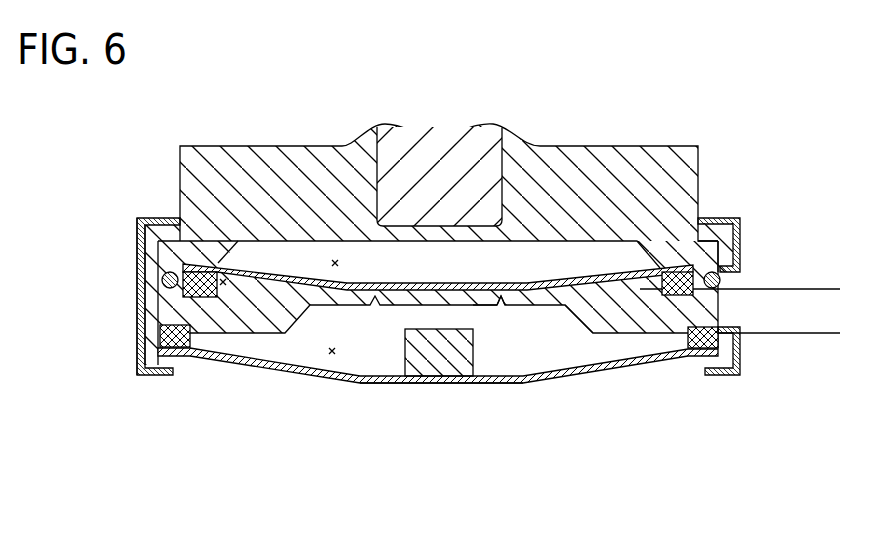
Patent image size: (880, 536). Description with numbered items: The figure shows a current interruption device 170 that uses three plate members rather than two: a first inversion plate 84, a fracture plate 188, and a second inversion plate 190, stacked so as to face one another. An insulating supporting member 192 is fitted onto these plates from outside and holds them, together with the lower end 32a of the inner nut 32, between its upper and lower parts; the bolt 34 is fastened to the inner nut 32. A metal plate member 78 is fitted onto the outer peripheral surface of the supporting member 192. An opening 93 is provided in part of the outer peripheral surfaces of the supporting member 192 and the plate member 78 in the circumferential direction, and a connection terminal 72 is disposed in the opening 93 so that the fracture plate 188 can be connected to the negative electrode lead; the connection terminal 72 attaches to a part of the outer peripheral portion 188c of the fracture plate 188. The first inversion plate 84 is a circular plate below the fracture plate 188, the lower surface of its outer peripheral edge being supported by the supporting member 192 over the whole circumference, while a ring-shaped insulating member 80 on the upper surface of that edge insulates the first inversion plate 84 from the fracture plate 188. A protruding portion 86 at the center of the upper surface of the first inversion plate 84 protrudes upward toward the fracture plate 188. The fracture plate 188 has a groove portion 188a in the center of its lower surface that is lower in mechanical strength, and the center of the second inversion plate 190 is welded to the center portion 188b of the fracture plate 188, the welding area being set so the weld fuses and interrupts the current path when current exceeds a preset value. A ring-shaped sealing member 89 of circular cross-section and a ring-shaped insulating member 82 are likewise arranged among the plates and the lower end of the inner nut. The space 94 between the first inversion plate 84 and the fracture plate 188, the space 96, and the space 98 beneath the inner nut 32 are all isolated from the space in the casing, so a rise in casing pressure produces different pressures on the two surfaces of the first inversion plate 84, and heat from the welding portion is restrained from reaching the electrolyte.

The inner nut 32 is at (178, 199).
The bolt 34 is at (465, 190).
The second inversion plate 190 is at (384, 344).
The lower end of the inner nut 32a is at (137, 252).
The supporting member 192 is at (138, 279).
The insulating member 82 is at (178, 290).
The insulating member 80 is at (158, 327).
The plate member 78 is at (143, 376).
The space 96 is at (215, 262).
The space 98 is at (335, 263).
The space 94 is at (332, 352).
The first inversion plate 84 is at (360, 383).
The protruding portion 86 is at (425, 358).
The fracture plate 188 is at (527, 308).
The groove portion 188a is at (500, 304).
The center portion 188b is at (483, 305).
The outer peripheral portion 188c is at (647, 322).
The sealing member 89 is at (733, 262).
The opening 93 is at (722, 278).
The connection terminal 72 is at (808, 334).
The current interruption device 170 is at (750, 178).